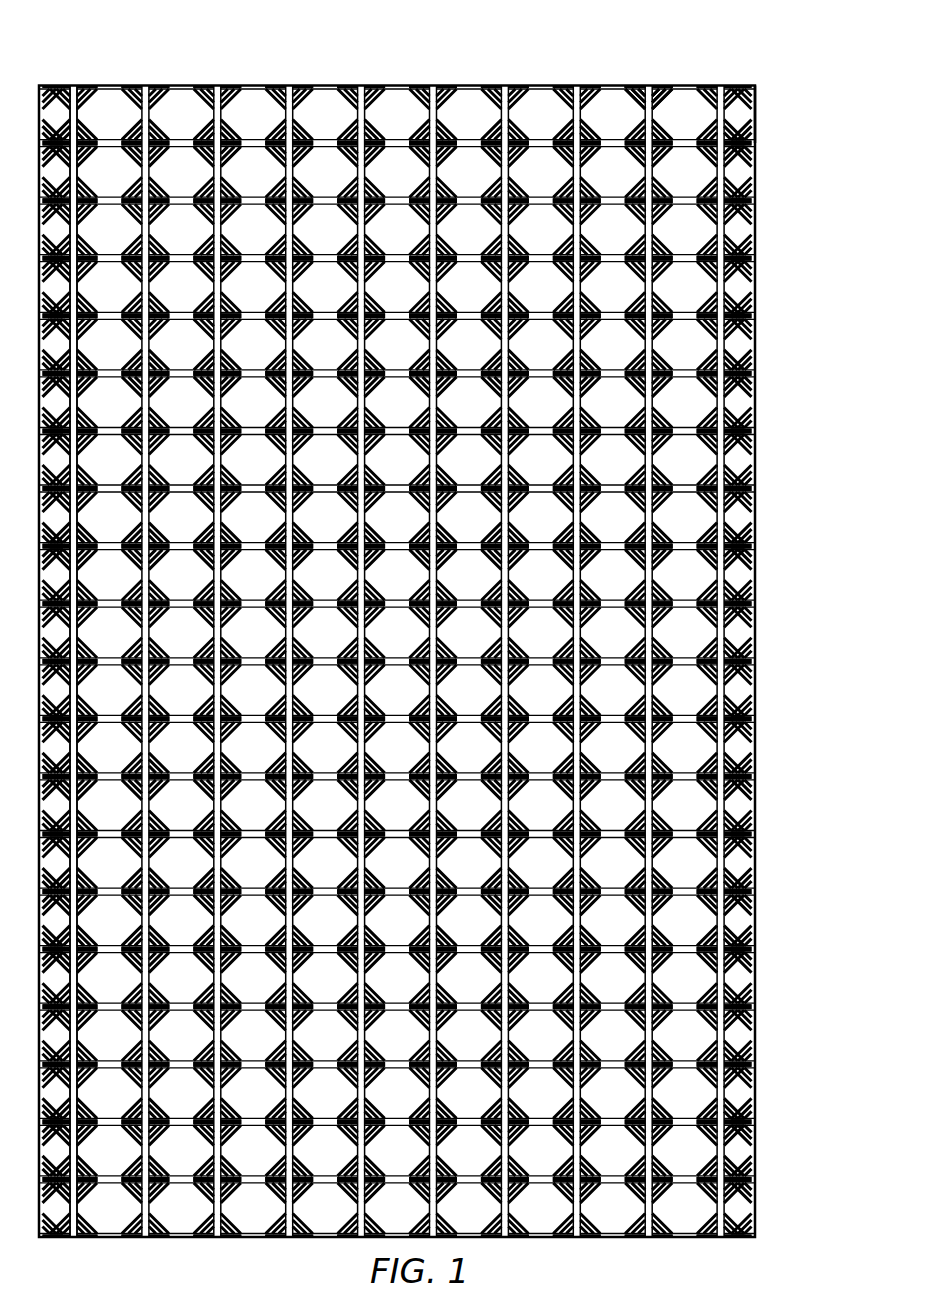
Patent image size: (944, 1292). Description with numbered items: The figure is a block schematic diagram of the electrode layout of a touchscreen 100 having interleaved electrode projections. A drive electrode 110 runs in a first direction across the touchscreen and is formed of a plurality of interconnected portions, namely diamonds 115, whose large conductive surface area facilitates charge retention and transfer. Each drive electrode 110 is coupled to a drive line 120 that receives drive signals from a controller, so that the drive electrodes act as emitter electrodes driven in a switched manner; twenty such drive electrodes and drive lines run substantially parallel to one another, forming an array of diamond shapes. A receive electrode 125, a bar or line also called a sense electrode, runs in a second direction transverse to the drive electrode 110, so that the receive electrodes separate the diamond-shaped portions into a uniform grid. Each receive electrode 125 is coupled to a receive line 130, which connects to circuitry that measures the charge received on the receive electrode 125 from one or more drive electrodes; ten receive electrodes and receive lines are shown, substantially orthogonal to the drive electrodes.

The touchscreen 100 is at (417, 638).
The drive electrode 110 is at (757, 93).
The diamonds 115 is at (690, 97).
The drive line 120 is at (765, 117).
The receive electrode 125 is at (70, 85).
The receive line 130 is at (76, 85).